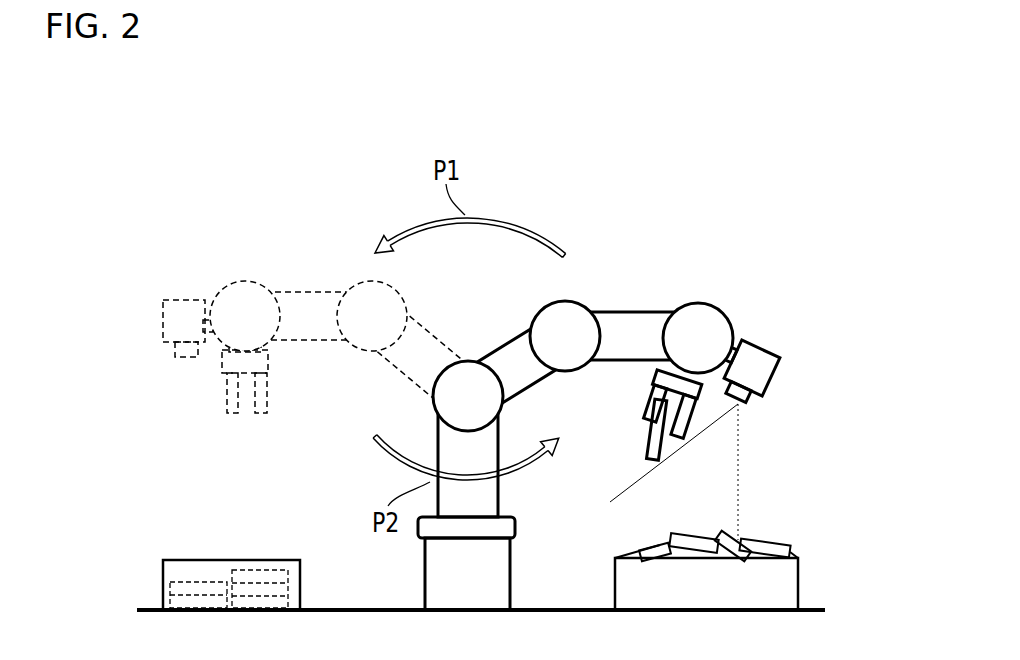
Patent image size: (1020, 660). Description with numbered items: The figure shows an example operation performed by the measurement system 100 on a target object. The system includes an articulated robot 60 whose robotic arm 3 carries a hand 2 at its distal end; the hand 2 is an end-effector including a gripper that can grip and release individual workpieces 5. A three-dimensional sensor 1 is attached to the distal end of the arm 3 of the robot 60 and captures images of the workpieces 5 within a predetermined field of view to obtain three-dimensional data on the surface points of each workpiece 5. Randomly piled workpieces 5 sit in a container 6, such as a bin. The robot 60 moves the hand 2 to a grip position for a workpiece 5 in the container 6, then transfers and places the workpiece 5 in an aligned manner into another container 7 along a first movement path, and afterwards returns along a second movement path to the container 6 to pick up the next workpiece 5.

The measurement system 100 is at (668, 236).
The robot 60 is at (505, 327).
The arm 3 is at (306, 292).
The hand 2 is at (268, 377).
The 3D sensor 1 is at (178, 322).
The workpiece 5 is at (641, 452).
The container 6 is at (615, 578).
The another container 7 is at (203, 560).